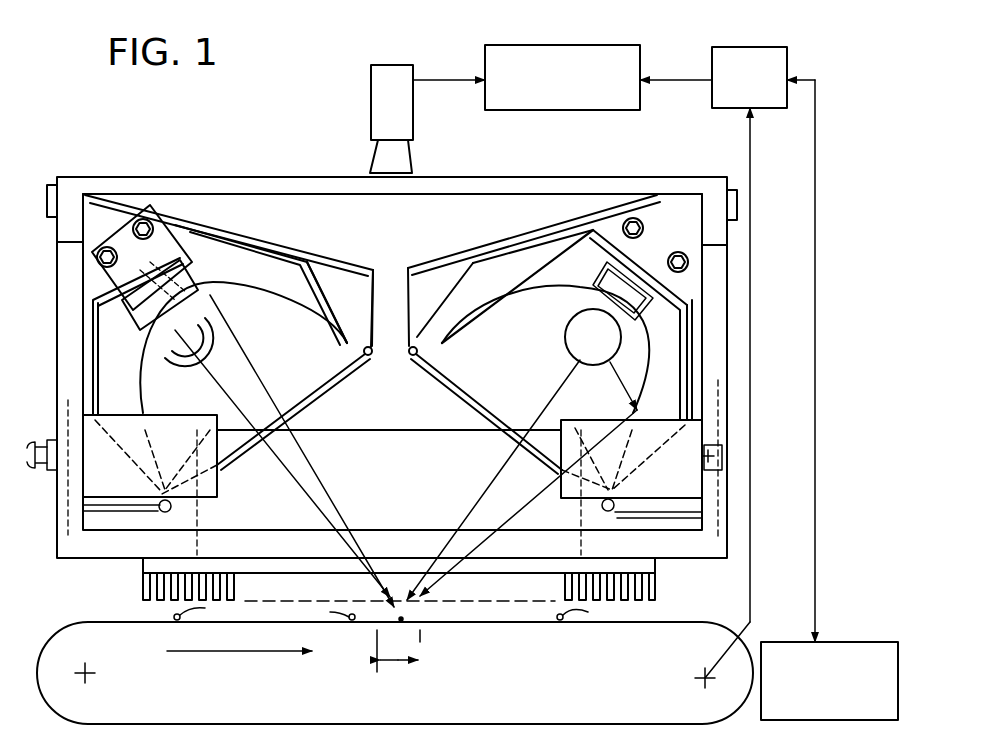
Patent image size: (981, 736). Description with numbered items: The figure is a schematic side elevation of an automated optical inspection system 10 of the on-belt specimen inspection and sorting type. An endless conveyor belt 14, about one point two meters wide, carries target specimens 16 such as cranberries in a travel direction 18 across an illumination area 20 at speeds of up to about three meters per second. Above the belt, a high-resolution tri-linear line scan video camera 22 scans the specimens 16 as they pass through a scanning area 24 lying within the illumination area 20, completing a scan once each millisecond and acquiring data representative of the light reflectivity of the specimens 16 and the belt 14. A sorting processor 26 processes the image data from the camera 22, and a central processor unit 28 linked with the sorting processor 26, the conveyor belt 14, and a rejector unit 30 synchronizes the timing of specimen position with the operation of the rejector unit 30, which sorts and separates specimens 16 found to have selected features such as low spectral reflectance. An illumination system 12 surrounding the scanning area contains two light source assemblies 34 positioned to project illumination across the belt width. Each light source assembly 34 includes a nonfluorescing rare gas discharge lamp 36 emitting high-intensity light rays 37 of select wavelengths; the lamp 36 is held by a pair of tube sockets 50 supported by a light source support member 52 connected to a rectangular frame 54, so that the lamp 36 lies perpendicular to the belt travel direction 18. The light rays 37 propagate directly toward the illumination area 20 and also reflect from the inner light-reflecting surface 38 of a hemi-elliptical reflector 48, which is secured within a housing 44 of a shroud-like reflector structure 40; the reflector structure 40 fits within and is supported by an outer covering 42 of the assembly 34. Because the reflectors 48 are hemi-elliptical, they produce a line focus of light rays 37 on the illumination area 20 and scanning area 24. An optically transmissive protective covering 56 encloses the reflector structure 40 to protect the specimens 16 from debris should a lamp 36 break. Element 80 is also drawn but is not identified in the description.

The automated optical inspection system 10 is at (352, 78).
The illumination system 12 is at (127, 172).
The endless conveyor belt 14 is at (97, 620).
The target specimens 16 is at (398, 612).
The direction 18 is at (233, 655).
The illumination area 20 is at (398, 669).
The tri-linear line scan video camera 22 is at (416, 127).
The scanning area 24 is at (408, 617).
The sorting processor 26 is at (650, 57).
The central processor unit 28 is at (727, 47).
The rejector unit 30 is at (863, 642).
The light source assembly 34 is at (253, 215).
The rare gas discharge lamp 36 is at (185, 365).
The light rays 37 is at (293, 470).
The inner light-reflecting surface 38 is at (483, 346).
The reflector structure 40 is at (90, 342).
The outer covering 42 is at (372, 267).
The housing 44 is at (300, 255).
The hemi-elliptical reflector 48 is at (275, 318).
The tube sockets 50 is at (180, 355).
The light source support member 52 is at (115, 295).
The rectangular frame 54 is at (197, 177).
The optically transmissive protective covering 56 is at (325, 382).
The lamp holder 80 is at (130, 315).